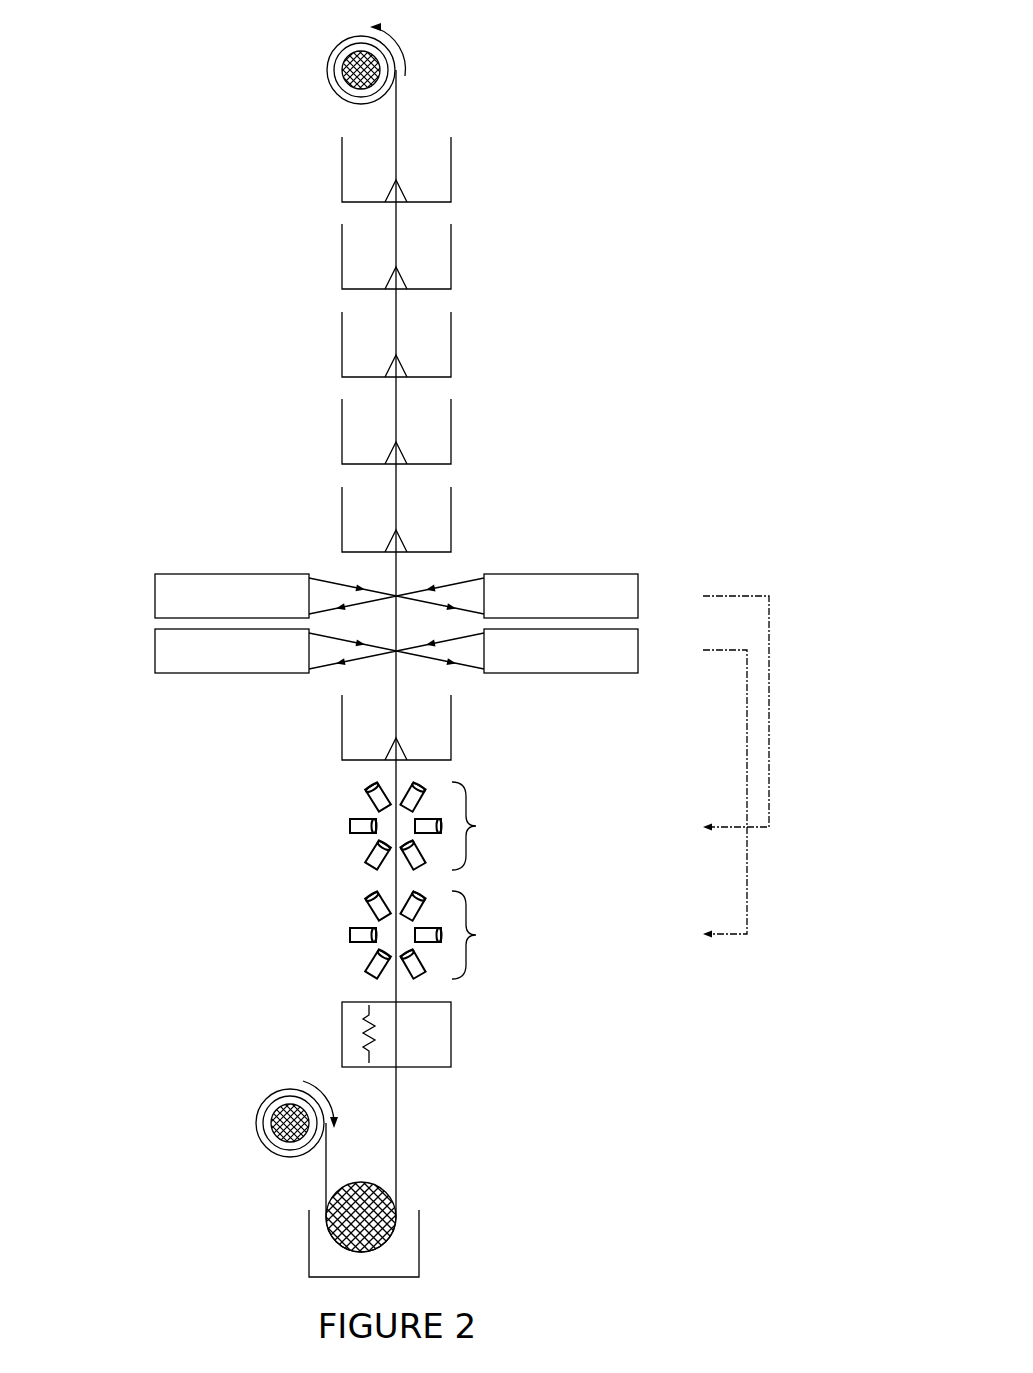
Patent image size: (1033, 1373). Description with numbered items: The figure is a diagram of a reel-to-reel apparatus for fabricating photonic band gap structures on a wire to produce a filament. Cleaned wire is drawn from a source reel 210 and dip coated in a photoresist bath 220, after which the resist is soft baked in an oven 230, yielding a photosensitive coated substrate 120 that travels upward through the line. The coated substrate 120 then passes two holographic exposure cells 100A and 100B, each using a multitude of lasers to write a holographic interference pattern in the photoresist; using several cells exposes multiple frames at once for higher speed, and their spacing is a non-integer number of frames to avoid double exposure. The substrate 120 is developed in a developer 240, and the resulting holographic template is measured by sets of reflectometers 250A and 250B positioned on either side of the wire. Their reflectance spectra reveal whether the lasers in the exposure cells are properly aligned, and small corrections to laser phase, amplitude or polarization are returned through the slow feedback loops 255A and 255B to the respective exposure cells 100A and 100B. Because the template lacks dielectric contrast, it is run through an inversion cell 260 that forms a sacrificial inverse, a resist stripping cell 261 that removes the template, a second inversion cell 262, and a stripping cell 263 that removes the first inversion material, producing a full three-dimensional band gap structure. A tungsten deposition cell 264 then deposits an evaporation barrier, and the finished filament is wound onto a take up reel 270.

The photosensitive coated substrate 120 is at (396, 1148).
The take up reel 270 is at (327, 72).
The tungsten deposition cell 264 is at (451, 168).
The stripping cell 263 is at (451, 255).
The inversion cell 262 is at (451, 343).
The resist stripping cell 261 is at (451, 430).
The inversion cell 260 is at (451, 518).
The set of reflectometers 250B is at (155, 595).
The set of reflectometers 250A is at (155, 650).
The feedback loop 255B is at (799, 713).
The feedback loop 255A is at (789, 794).
The developer 240 is at (451, 726).
The holographic exposure cell 100B is at (476, 826).
The holographic exposure cell 100A is at (476, 935).
The oven 230 is at (451, 1033).
The source reel 210 is at (256, 1121).
The photoresist bath 220 is at (419, 1240).